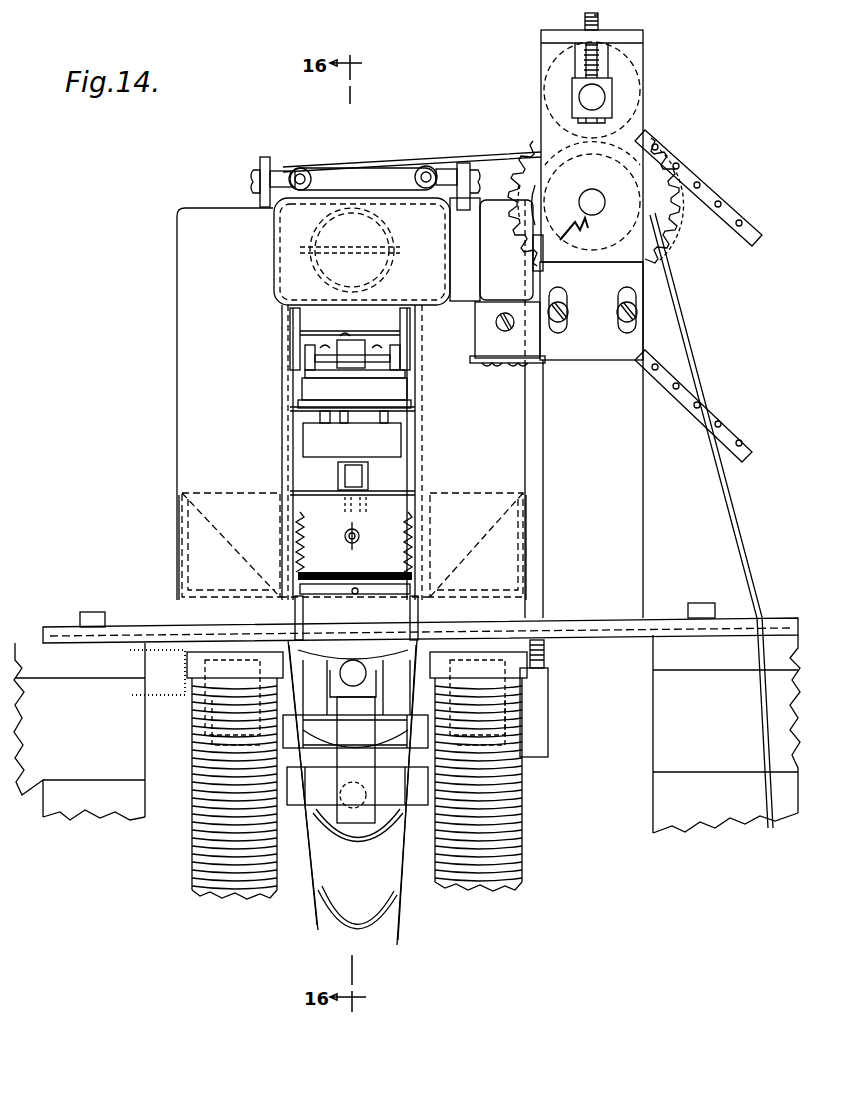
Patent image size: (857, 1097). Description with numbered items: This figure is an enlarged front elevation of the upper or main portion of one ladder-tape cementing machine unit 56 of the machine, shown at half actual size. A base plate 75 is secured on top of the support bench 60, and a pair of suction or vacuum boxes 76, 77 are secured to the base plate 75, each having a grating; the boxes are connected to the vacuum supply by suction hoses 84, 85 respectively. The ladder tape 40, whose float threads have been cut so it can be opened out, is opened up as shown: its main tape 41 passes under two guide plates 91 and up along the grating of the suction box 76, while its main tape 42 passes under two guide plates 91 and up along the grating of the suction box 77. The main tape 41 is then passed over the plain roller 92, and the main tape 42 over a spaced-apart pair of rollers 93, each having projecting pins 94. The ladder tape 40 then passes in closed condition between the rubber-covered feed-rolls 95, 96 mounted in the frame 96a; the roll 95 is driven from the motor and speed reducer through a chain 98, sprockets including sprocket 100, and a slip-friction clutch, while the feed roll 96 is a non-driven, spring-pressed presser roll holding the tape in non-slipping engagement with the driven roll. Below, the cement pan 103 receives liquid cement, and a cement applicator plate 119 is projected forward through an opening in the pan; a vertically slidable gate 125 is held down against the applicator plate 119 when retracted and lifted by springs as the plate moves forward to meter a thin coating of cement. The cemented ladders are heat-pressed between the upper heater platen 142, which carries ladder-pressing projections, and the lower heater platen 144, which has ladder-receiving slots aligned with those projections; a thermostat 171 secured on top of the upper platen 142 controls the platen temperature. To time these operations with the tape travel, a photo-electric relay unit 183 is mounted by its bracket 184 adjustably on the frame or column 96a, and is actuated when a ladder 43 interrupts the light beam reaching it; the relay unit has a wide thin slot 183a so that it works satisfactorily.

The ladder tape 40 is at (520, 152).
The main tape 41 is at (402, 912).
The main tape 42 is at (312, 915).
The ladder 43 is at (300, 250).
The machine unit 56 is at (172, 240).
The support bench 60 is at (60, 826).
The base plate 75 is at (130, 622).
The suction box 76 is at (500, 405).
The suction box 77 is at (177, 356).
The suction hose 84 is at (514, 806).
The suction hose 85 is at (192, 838).
The guide plates 91 is at (300, 624).
The plain roller 92 is at (415, 184).
The rollers 93 is at (314, 180).
The projecting pins 94 is at (363, 184).
The feed-roll 95 is at (580, 250).
The feed roll 96 is at (630, 102).
The frame 96a is at (630, 46).
The chain 98 is at (727, 212).
The sprocket 100 is at (672, 229).
The cement pan 103 is at (180, 545).
The cement applicator plate 119 is at (384, 588).
The gate 125 is at (392, 566).
The upper heater platen 142 is at (405, 398).
The lower heater platen 144 is at (398, 437).
The thermostat 171 is at (330, 347).
The photo-electric relay unit 183 is at (452, 302).
The slot 183a is at (335, 254).
The bracket 184 is at (616, 360).